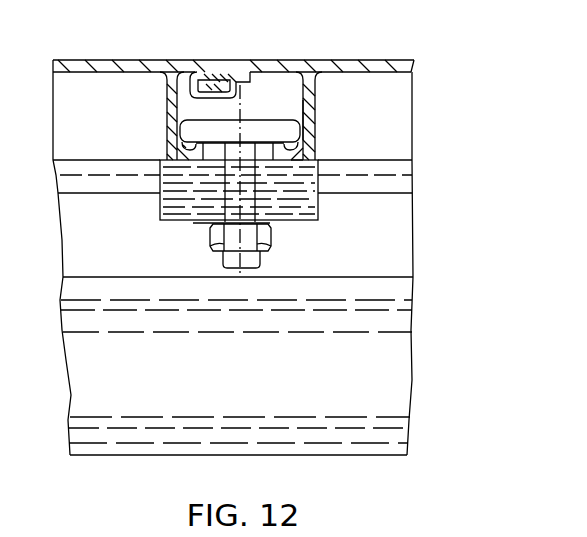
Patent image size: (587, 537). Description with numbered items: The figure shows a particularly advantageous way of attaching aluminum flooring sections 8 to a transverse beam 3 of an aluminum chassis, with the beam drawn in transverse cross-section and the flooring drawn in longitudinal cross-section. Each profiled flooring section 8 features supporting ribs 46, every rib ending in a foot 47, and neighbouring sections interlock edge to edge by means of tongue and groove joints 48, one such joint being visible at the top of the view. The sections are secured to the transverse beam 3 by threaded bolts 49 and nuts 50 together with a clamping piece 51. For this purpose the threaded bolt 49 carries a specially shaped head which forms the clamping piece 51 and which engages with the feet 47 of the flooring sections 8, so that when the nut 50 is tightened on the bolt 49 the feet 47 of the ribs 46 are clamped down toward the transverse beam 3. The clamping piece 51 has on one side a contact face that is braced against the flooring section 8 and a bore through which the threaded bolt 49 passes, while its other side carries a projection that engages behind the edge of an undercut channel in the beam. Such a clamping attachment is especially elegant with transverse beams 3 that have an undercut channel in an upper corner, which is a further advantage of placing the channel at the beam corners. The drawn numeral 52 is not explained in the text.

The transverse beam 3 is at (421, 244).
The flooring section 8 is at (379, 60).
The supporting rib 46 is at (309, 121).
The foot 47 is at (294, 156).
The tongue and groove joint 48 is at (223, 84).
The threaded bolt 49 is at (232, 146).
The nut 50 is at (218, 238).
The clamping piece 51 is at (178, 200).
The T-head 52 is at (228, 128).